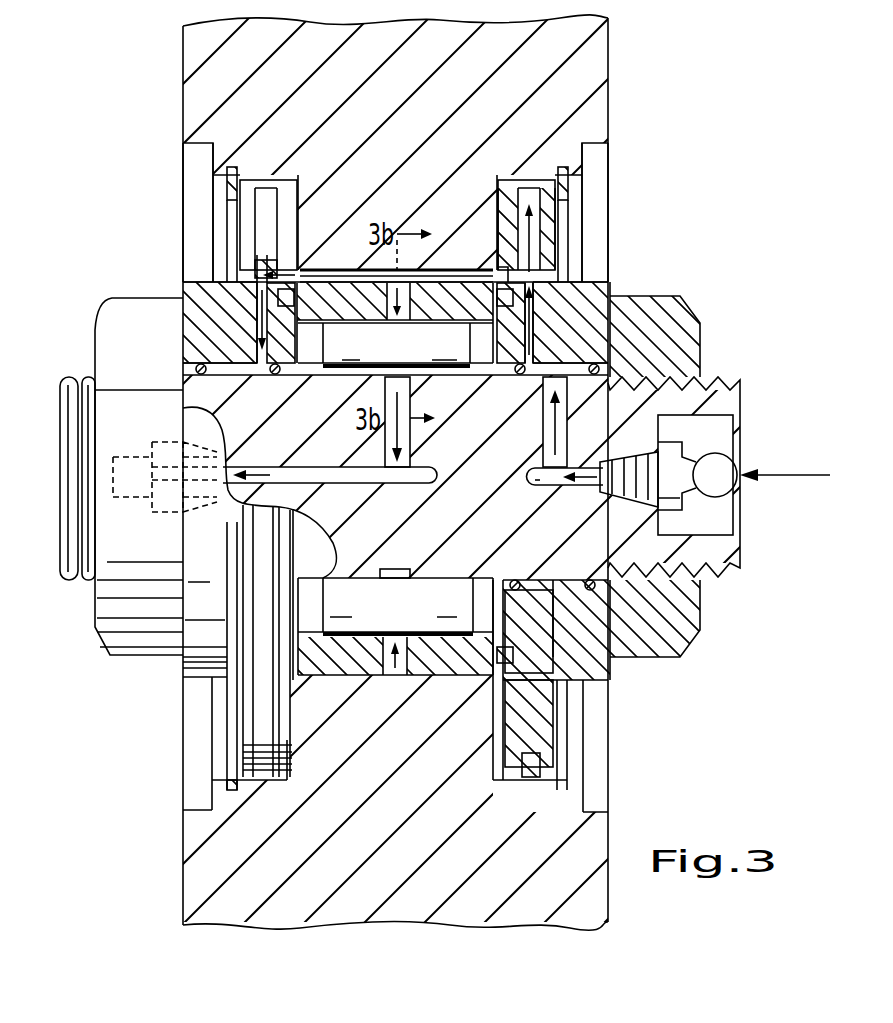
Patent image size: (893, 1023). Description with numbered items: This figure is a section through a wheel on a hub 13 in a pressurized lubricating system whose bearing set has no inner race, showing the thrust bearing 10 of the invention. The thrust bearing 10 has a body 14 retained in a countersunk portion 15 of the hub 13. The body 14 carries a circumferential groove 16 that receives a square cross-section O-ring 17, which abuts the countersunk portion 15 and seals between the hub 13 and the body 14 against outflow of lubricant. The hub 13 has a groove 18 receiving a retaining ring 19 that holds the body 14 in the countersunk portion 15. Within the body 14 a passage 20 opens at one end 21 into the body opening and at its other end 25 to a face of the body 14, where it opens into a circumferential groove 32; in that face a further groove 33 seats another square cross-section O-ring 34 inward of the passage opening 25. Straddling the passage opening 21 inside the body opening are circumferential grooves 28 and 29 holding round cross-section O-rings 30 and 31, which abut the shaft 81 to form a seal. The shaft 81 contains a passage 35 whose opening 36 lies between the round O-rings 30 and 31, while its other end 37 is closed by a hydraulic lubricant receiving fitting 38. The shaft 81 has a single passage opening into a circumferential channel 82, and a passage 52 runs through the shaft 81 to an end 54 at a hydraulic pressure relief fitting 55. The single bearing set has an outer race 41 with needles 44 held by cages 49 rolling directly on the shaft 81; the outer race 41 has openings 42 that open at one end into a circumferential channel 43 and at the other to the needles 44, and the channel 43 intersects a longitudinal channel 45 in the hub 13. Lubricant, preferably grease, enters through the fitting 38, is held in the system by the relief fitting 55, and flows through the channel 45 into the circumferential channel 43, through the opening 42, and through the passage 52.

The thrust bearing 10 is at (183, 280).
The hub 13 is at (400, 839).
The body 14 is at (245, 203).
The countersunk portion 15 is at (281, 782).
The circumferential groove 16 is at (263, 757).
The square cross-section O-ring 17 is at (265, 190).
The groove 18 is at (232, 167).
The retaining ring 19 is at (229, 193).
The passage 20 is at (255, 305).
The end of passage 21 is at (270, 350).
The other end of passage 25 is at (258, 268).
The circumferential groove 28 is at (190, 358).
The circumferential groove 29 is at (283, 347).
The round cross-section O-ring 30 is at (205, 376).
The round cross-section O-ring 31 is at (278, 375).
The circumferential groove 32 is at (278, 272).
The groove 33 is at (216, 313).
The square cross-section O-ring 34 is at (294, 302).
The passage 35 is at (558, 444).
The opening 36 is at (547, 412).
The other end of passage 37 is at (603, 484).
The hydraulic lubricant receiving fitting 38 is at (724, 462).
The outer race 41 is at (395, 323).
The openings 42 is at (404, 302).
The circumferential channel 43 is at (380, 272).
The needles 44 is at (417, 356).
The longitudinal channel 45 is at (455, 272).
The cages 49 is at (343, 372).
The passage 52 is at (386, 485).
The end of passage 54 is at (236, 481).
The hydraulic pressure relief fitting 55 is at (113, 488).
The shaft 81 is at (490, 534).
The circumferential channel 82 is at (413, 573).